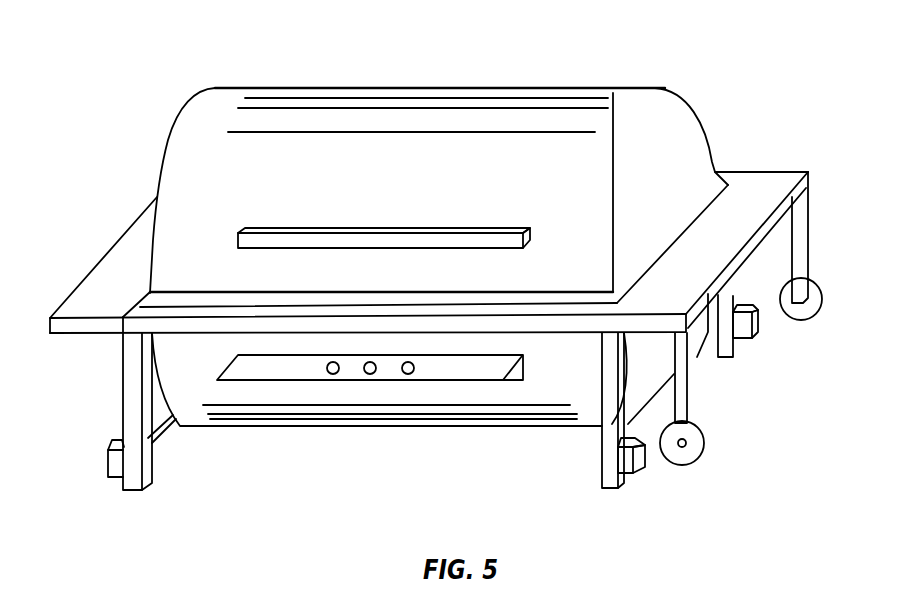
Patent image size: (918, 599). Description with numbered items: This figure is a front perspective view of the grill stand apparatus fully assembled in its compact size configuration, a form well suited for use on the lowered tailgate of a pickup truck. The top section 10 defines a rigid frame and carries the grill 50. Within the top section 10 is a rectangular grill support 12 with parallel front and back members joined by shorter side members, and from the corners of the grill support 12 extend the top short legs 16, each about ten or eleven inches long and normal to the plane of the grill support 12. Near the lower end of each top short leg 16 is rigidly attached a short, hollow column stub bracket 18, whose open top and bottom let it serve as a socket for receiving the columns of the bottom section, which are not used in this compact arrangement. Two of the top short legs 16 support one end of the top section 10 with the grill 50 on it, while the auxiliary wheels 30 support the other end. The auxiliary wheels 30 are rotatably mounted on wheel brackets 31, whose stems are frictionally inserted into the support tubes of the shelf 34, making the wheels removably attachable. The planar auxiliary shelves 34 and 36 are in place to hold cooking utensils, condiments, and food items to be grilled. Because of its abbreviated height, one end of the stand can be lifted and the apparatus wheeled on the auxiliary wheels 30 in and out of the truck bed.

The top section 10 is at (153, 54).
The grill support 12 is at (236, 325).
The top short legs 16 is at (128, 408).
The column stub bracket 18 is at (112, 462).
The auxiliary wheels 30 is at (815, 296).
The wheel brackets 31 is at (806, 247).
The auxiliary shelf 34 is at (787, 170).
The auxiliary shelf 36 is at (120, 253).
The grill 50 is at (682, 120).